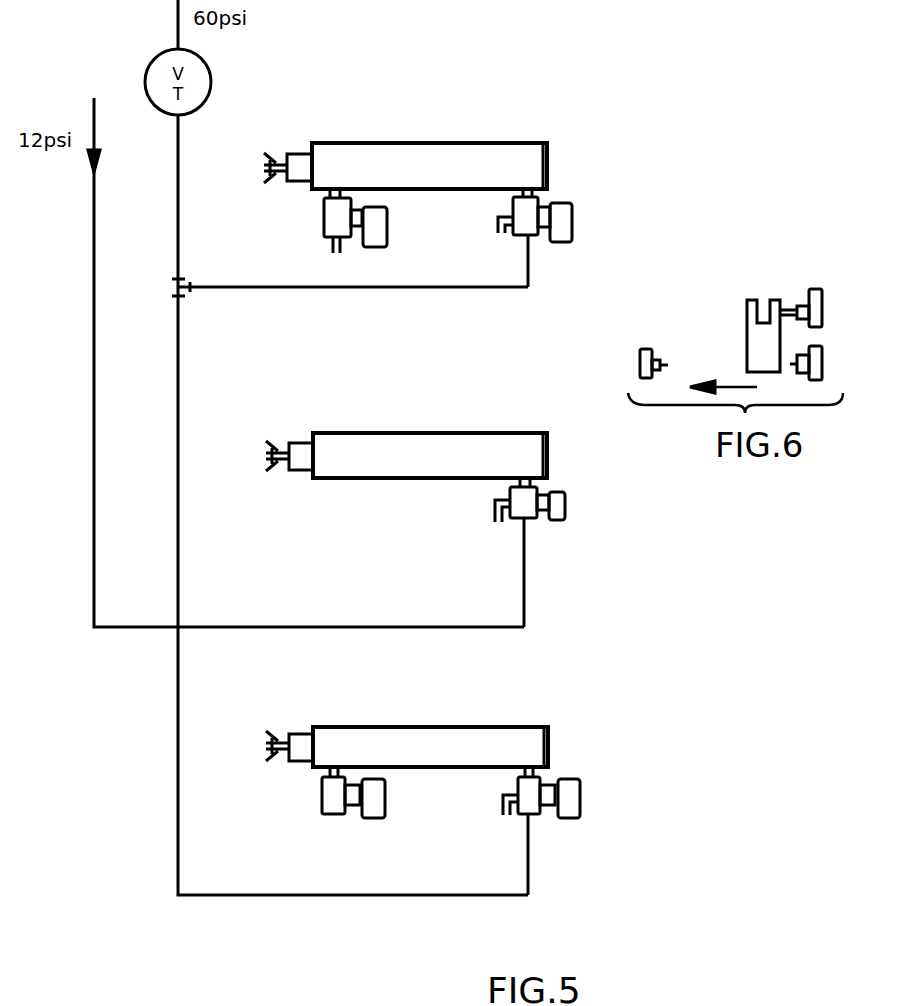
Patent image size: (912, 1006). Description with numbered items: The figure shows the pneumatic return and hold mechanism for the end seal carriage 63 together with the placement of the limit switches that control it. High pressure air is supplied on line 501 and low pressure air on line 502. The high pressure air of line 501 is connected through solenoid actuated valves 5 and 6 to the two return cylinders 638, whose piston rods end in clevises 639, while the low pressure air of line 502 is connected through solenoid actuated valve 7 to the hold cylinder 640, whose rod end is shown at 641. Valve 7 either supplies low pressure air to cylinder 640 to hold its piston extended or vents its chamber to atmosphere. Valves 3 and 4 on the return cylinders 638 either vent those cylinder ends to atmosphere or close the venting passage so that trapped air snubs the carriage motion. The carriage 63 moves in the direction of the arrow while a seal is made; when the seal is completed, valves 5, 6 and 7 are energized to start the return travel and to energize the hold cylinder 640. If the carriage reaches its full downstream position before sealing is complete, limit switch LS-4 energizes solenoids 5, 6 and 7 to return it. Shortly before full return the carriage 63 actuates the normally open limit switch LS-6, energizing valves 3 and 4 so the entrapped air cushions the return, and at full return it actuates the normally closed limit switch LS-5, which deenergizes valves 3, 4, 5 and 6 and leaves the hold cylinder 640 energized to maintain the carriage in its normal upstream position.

In FIG. 5, the high pressure air line 501 is at (177, 192).
In FIG. 5, the low pressure air line 502 is at (93, 237).
In FIG. 5, the return pneumatic actuator 638 is at (391, 143).
In FIG. 5, the piston rod clevis 639 is at (272, 163).
In FIG. 5, the hold actuator 640 is at (365, 433).
In FIG. 5, the piston rod clevis 641 is at (282, 432).
In FIG. 5, the solenoid actuated valve 3 is at (386, 233).
In FIG. 5, the solenoid actuated valve 4 is at (376, 805).
In FIG. 5, the solenoid actuated valve 5 is at (572, 225).
In FIG. 5, the solenoid actuated valve 6 is at (575, 807).
In FIG. 5, the solenoid actuated valve 7 is at (566, 510).
In FIG. 6, the carriage 63 is at (752, 330).
In FIG. 6, the limit switch LS-4 is at (629, 348).
In FIG. 6, the normally closed limit switch LS-5 is at (832, 360).
In FIG. 6, the normally open limit switch LS-6 is at (828, 296).